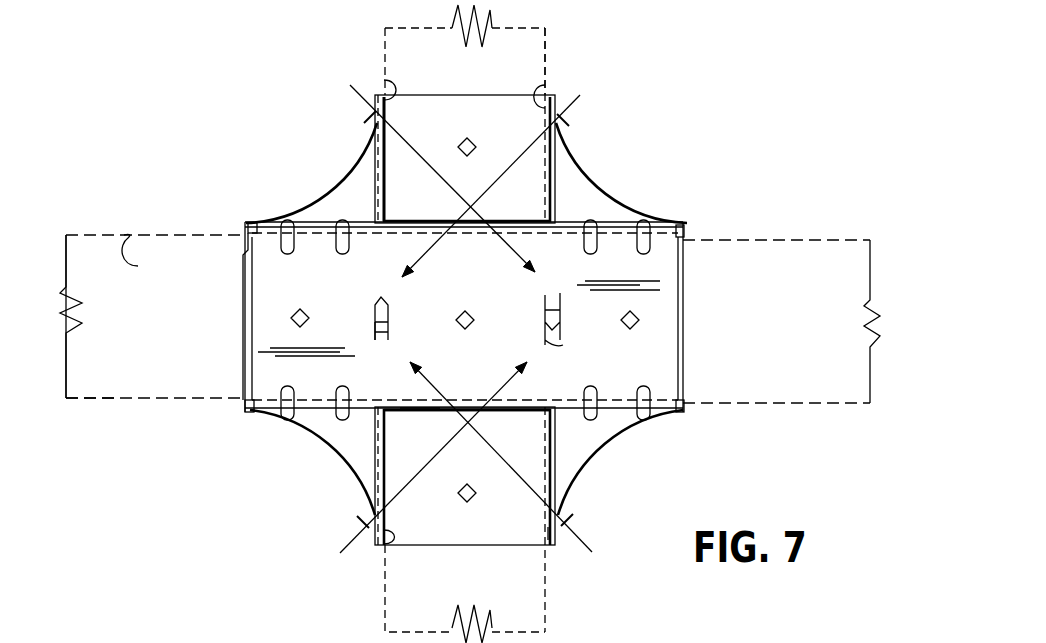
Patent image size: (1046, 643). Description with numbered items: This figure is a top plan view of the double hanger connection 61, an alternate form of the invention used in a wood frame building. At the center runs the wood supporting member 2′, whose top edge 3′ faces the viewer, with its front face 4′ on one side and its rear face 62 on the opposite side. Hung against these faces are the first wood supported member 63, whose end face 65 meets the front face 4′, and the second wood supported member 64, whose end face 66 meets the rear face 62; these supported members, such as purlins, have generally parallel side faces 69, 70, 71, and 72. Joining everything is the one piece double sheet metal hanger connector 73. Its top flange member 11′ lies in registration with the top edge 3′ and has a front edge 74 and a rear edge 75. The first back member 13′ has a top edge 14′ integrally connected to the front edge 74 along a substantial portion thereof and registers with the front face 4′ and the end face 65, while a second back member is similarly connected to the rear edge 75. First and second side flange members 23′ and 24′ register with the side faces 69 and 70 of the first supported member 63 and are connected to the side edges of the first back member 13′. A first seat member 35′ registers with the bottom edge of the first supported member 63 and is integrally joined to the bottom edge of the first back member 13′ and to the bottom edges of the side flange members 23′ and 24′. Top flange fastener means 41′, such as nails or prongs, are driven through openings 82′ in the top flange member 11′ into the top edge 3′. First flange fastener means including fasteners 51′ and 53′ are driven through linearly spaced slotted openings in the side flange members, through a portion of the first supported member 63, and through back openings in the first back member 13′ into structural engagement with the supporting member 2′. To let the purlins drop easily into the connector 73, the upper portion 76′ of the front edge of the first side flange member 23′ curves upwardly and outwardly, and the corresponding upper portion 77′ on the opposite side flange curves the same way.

The wood supporting member 2′ is at (96, 233).
The top edge 3′ is at (162, 333).
The front face 4′ is at (138, 266).
The top flange member 11′ is at (352, 303).
The first back member 13′ is at (406, 221).
The top edge of first back member 14′ is at (311, 222).
The first side flange member 23′ is at (548, 92).
The second side flange member 24′ is at (388, 95).
The first seat member 35′ is at (484, 190).
The top flange fastener means 41′ is at (388, 322).
The fastener 51′ is at (510, 156).
The fastener 53′ is at (407, 155).
The double hanger connection 61 is at (605, 170).
The rear face 62 is at (95, 400).
The first wood supported member 63 is at (549, 43).
The second wood supported member 64 is at (547, 597).
The end face 65 is at (493, 232).
The end face 66 is at (413, 402).
The side face 69 is at (387, 48).
The side face 70 is at (547, 63).
The side face 71 is at (383, 595).
The side face 72 is at (547, 622).
The one piece double sheet metal hanger connector 73 is at (685, 226).
The front edge of top flange member 74 is at (265, 222).
The rear edge of top flange member 75 is at (257, 414).
The upper portion of front edge 76′ is at (600, 188).
The upper portion of front edge 77′ is at (350, 182).
The openings 82′ is at (390, 300).